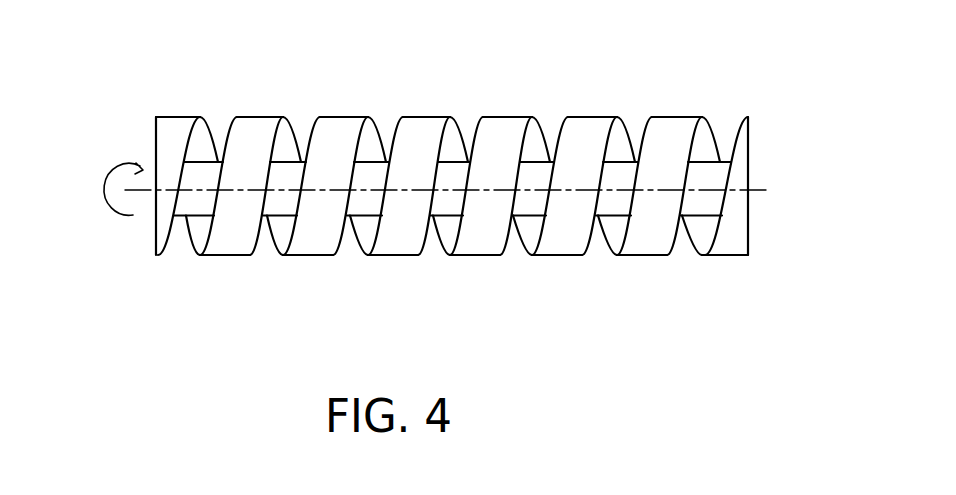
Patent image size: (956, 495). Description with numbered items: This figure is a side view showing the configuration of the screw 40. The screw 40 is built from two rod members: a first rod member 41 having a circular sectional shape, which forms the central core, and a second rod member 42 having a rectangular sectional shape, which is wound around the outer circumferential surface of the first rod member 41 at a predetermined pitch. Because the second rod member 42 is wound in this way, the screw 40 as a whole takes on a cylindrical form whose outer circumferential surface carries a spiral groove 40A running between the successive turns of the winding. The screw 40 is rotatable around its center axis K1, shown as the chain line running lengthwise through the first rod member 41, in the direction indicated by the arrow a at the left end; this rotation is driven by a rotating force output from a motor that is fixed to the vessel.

The screw 40 is at (450, 189).
The spiral groove 40A is at (309, 113).
The first rod member 41 is at (623, 190).
The second rod member 42 is at (508, 115).
The center axis K1 is at (760, 189).
The arrow a is at (118, 192).